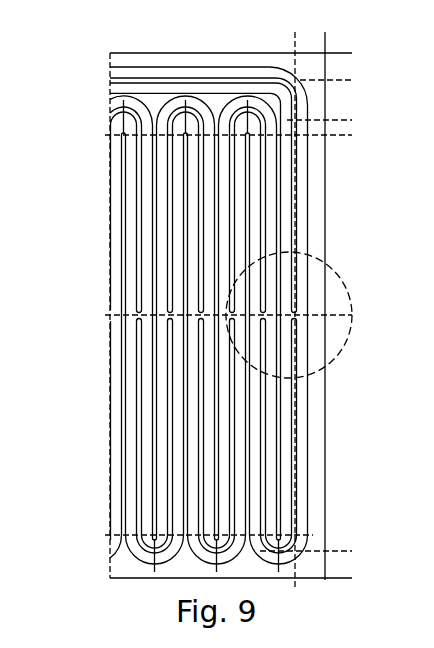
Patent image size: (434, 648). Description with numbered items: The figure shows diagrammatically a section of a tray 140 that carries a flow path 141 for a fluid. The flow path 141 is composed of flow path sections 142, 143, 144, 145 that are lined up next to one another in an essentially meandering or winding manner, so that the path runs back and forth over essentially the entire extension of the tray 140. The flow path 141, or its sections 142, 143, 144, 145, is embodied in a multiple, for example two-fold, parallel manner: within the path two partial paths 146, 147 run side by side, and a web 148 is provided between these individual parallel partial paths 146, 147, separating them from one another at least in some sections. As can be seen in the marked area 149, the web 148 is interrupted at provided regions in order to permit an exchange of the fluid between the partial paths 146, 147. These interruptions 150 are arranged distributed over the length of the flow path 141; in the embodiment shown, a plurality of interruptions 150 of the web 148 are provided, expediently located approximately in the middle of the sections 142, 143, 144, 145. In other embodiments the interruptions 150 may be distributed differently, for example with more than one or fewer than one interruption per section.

The tray 140 is at (118, 569).
The flow path 141 is at (303, 508).
The flow path section 142 is at (318, 212).
The flow path section 143 is at (272, 172).
The flow path section 144 is at (236, 112).
The flow path section 145 is at (172, 118).
The partial path 146 is at (310, 468).
The partial path 147 is at (290, 420).
The web 148 is at (298, 345).
The marked area 149 is at (350, 272).
The interruptions 150 is at (305, 313).